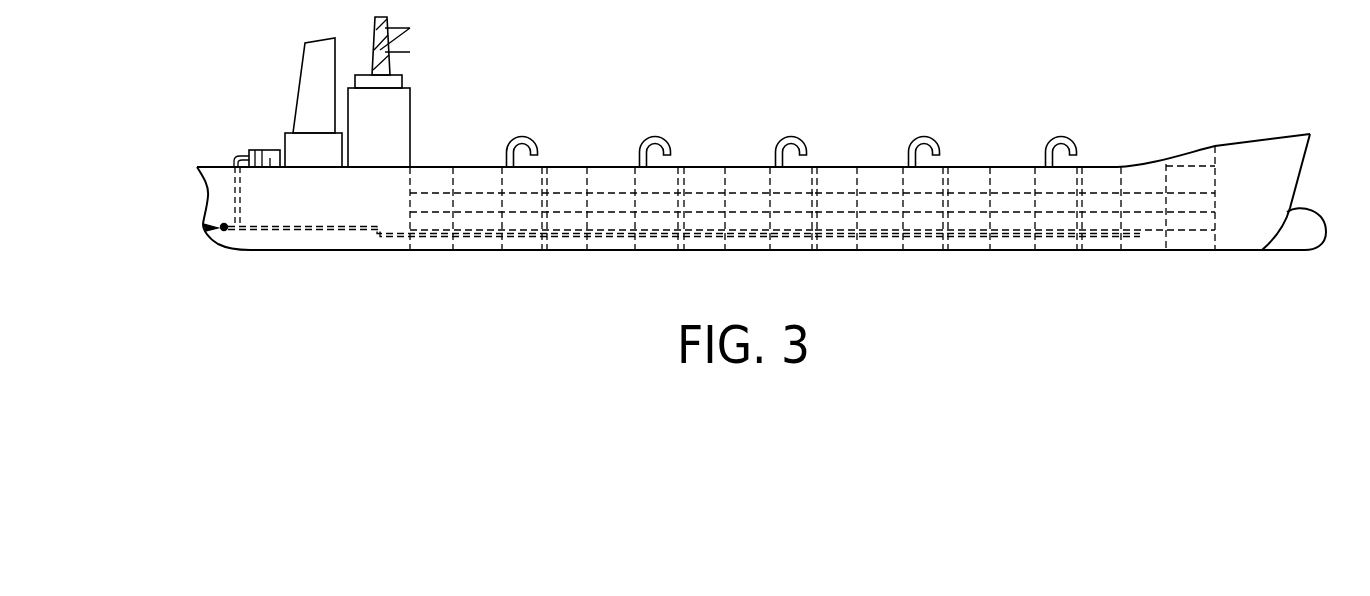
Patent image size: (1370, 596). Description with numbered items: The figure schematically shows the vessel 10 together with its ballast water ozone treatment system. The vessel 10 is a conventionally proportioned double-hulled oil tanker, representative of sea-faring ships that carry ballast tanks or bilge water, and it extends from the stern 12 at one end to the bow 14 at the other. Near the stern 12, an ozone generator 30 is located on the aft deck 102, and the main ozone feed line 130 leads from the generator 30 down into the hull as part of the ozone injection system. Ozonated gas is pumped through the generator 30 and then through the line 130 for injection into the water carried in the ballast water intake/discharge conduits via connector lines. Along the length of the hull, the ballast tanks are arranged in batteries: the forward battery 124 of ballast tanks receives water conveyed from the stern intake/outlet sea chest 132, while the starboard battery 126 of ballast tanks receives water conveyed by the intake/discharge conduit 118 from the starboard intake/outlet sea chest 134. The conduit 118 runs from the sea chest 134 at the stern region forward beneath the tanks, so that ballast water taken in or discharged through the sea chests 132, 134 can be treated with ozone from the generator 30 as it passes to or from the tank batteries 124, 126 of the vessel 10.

The vessel 10 is at (1221, 67).
The stern 12 is at (202, 187).
The bow 14 is at (1307, 158).
The ozone generator 30 is at (263, 148).
The aft deck 102 is at (203, 167).
The intake/discharge conduit 118 is at (300, 230).
The forward battery of ballast tanks 124 is at (877, 178).
The starboard battery of ballast tanks 126 is at (477, 182).
The main ozone feed line 130 is at (237, 192).
The stern intake/outlet sea chest 132 is at (216, 228).
The starboard intake/outlet sea chest 134 is at (224, 231).